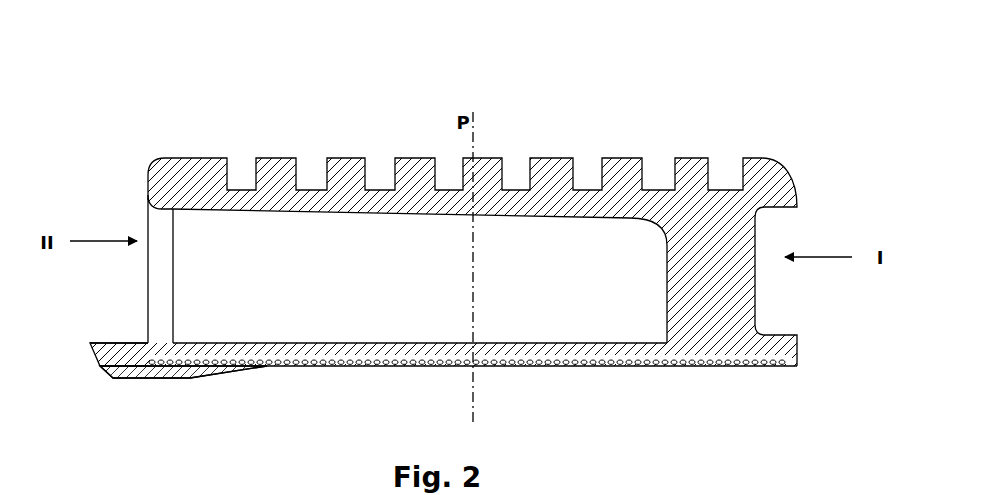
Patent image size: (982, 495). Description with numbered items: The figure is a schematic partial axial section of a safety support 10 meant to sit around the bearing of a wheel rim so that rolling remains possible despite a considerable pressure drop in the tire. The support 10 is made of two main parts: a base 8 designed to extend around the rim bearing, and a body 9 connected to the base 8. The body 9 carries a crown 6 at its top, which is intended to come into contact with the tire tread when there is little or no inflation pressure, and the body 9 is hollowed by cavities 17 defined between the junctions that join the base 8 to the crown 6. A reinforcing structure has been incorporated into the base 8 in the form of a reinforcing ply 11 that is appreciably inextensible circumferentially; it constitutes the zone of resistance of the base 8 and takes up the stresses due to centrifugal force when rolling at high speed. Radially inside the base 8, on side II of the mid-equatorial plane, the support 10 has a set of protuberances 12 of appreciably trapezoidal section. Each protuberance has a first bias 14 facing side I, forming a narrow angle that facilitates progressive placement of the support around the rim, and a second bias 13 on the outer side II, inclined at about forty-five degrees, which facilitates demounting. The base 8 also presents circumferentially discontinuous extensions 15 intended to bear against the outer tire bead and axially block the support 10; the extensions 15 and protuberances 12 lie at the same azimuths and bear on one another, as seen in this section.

The crown 6 is at (500, 172).
The base 8 is at (365, 358).
The body 9 is at (677, 278).
The support 10 is at (448, 266).
The reinforcing ply 11 is at (552, 362).
The protuberances 12 is at (173, 367).
The second bias 13 is at (107, 372).
The first bias 14 is at (220, 375).
The extensions 15 is at (110, 352).
The cavities 17 is at (378, 301).